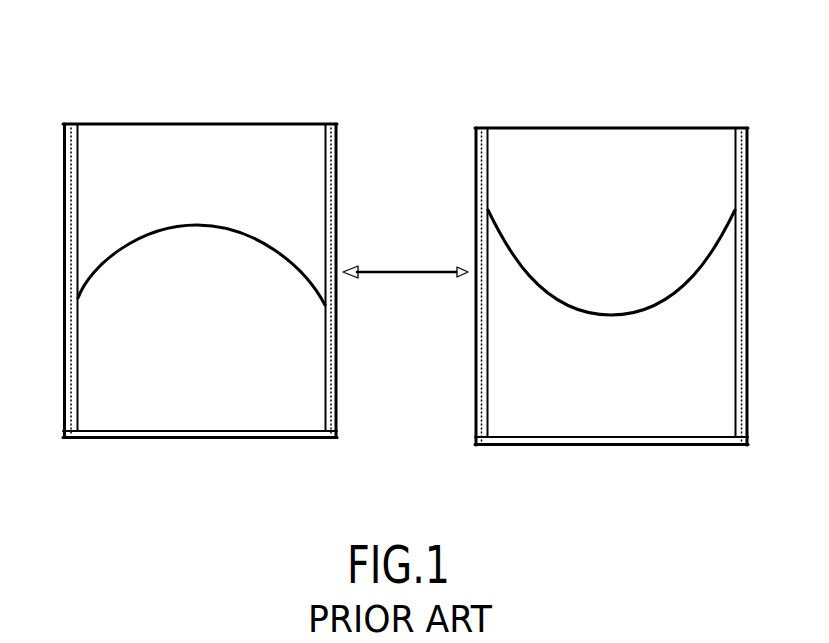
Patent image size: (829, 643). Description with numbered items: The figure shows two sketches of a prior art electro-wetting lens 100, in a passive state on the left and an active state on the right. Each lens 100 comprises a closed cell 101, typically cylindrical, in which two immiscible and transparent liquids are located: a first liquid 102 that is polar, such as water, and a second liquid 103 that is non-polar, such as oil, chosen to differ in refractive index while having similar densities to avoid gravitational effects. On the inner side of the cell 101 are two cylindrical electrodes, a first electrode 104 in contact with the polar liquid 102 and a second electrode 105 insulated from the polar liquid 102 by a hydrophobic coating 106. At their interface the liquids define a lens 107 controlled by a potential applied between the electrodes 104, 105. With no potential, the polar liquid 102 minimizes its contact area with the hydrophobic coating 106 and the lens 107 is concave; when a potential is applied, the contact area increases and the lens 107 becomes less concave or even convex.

The electro-wetting lens 100 is at (405, 256).
The closed cell 101 is at (528, 128).
The first liquid 102 is at (540, 337).
The second liquid 103 is at (543, 183).
The first electrode 104 is at (508, 444).
The second electrode 105 is at (477, 417).
The hydrophobic coating 106 is at (487, 378).
The lens 107 is at (273, 248).